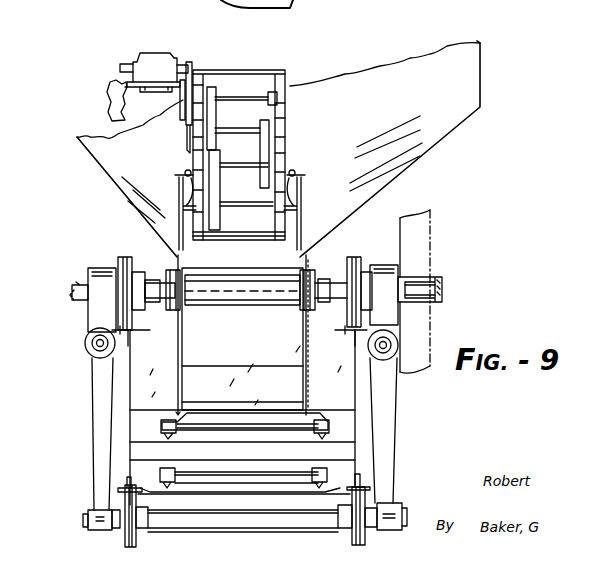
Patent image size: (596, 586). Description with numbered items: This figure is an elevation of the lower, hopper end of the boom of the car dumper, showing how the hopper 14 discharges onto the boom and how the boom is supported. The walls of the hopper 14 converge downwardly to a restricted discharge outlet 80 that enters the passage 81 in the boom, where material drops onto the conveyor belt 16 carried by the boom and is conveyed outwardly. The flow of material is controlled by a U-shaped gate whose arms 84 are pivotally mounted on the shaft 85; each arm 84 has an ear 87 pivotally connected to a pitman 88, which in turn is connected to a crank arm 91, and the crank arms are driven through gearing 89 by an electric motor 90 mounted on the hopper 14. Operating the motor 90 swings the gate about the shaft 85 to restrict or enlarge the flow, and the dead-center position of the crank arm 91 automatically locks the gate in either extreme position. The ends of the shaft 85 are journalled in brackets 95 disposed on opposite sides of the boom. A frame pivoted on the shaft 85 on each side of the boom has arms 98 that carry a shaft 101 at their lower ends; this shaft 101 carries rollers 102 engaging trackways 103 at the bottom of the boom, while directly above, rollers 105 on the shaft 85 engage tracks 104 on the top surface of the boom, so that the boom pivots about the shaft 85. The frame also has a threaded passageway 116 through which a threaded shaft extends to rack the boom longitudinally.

The hopper 14 is at (452, 123).
The conveyor belt 16 is at (316, 428).
The discharge outlet 80 is at (257, 303).
The passage 81 is at (185, 393).
The arms 84 is at (304, 336).
The shaft 85 is at (237, 278).
The ear 87 is at (183, 307).
The pitman 88 is at (302, 224).
The gearing 89 is at (268, 155).
The electric motor 90 is at (165, 55).
The crank arm 91 is at (297, 196).
The brackets 95 is at (431, 264).
The arms 98 is at (96, 413).
The shaft 101 is at (215, 533).
The rollers 102 is at (130, 547).
The trackways 103 is at (122, 494).
The tracks 104 is at (95, 327).
The rollers 105 is at (127, 258).
The threaded passageway 116 is at (91, 347).